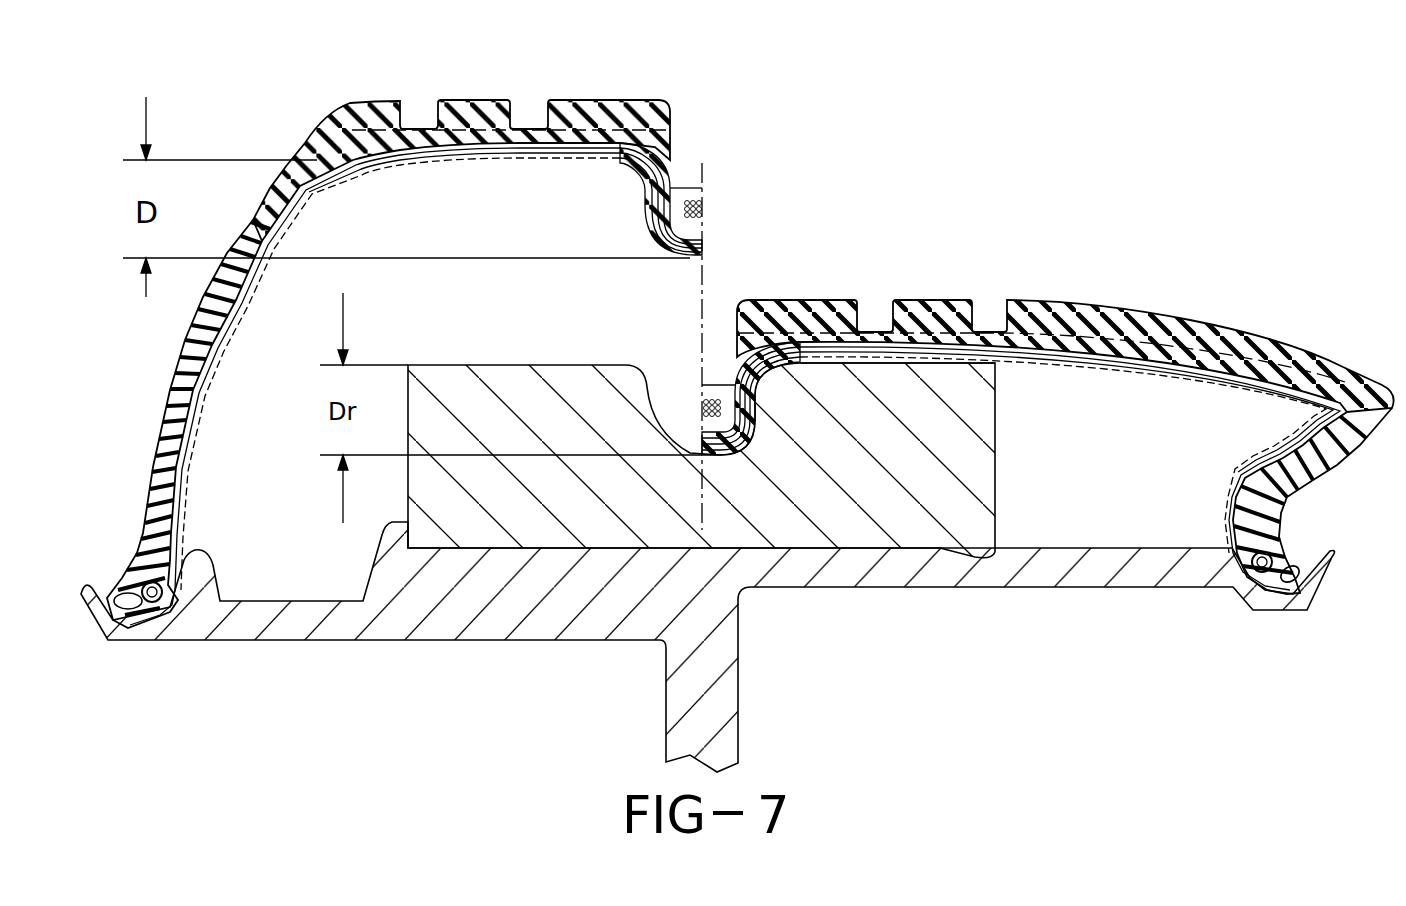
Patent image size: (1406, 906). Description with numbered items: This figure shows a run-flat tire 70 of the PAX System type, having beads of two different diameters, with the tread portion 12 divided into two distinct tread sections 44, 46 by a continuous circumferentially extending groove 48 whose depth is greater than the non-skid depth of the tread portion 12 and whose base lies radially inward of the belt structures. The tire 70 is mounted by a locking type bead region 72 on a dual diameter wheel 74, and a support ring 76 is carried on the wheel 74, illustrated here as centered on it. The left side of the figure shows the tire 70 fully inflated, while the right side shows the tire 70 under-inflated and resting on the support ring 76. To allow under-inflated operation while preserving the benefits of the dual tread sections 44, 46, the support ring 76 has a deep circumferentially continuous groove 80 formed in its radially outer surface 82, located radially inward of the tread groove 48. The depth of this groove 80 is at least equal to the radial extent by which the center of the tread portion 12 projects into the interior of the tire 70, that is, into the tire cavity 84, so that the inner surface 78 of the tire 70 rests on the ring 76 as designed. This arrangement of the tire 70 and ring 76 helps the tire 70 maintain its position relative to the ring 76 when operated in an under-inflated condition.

The tread portion 12 is at (477, 100).
The tread section 44 is at (409, 328).
The tread section 46 is at (1021, 416).
The groove 48 is at (670, 160).
The tire 70 is at (252, 152).
The bead region 72 is at (190, 527).
The wheel 74 is at (438, 603).
The support ring 76 is at (701, 415).
The inner surface 78 is at (520, 167).
The groove 80 is at (648, 400).
The radially outer surface 82 is at (571, 360).
The tire cavity 84 is at (445, 227).